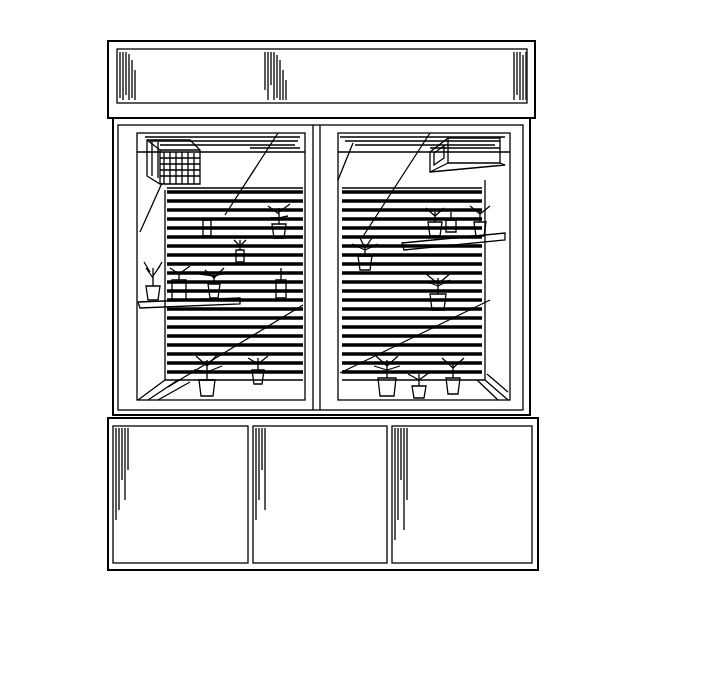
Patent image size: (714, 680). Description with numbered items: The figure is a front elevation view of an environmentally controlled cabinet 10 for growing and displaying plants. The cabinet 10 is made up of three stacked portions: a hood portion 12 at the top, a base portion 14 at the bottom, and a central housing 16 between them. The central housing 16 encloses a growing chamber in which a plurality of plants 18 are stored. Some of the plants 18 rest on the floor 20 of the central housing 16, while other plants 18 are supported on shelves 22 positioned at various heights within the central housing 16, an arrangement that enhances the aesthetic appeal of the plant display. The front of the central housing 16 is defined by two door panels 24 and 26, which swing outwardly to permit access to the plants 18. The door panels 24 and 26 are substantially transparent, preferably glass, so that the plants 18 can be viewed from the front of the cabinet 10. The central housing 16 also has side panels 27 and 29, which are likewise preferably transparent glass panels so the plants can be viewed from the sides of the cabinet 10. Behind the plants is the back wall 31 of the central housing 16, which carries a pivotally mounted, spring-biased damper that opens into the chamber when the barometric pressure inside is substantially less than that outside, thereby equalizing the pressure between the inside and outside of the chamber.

The cabinet 10 is at (323, 19).
The hood portion 12 is at (547, 61).
The base portion 14 is at (547, 476).
The central housing 16 is at (546, 295).
The plants 18 is at (146, 289).
The floor 20 is at (160, 378).
The shelves 22 is at (152, 308).
The door panel 24 is at (127, 163).
The door panel 26 is at (515, 153).
The side panel 27 is at (145, 210).
The side panel 29 is at (503, 342).
The back wall 31 is at (226, 177).